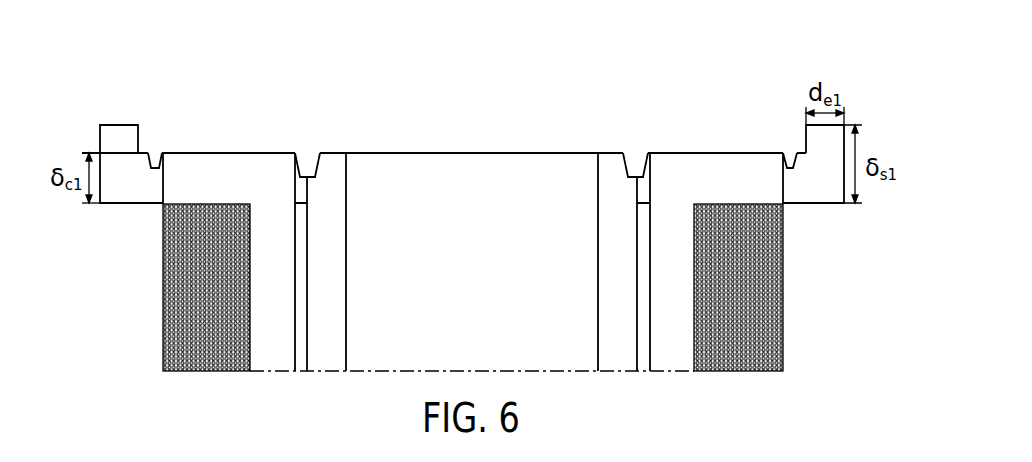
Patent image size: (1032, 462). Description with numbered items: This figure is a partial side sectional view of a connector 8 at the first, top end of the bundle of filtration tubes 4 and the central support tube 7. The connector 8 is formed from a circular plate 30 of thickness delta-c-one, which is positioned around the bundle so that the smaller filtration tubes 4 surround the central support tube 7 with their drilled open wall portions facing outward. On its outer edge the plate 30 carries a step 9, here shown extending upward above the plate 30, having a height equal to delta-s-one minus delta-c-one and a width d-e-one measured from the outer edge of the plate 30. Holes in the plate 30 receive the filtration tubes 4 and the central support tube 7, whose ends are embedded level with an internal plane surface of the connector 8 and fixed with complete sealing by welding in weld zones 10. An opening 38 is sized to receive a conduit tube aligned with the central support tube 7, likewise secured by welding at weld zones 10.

The filtration tubes 4 is at (193, 318).
The central support tube 7 is at (420, 311).
The connector 8 is at (817, 204).
The step 9 is at (120, 124).
The weld zones 10 is at (155, 153).
The plate 30 is at (133, 205).
The opening 38 is at (648, 143).